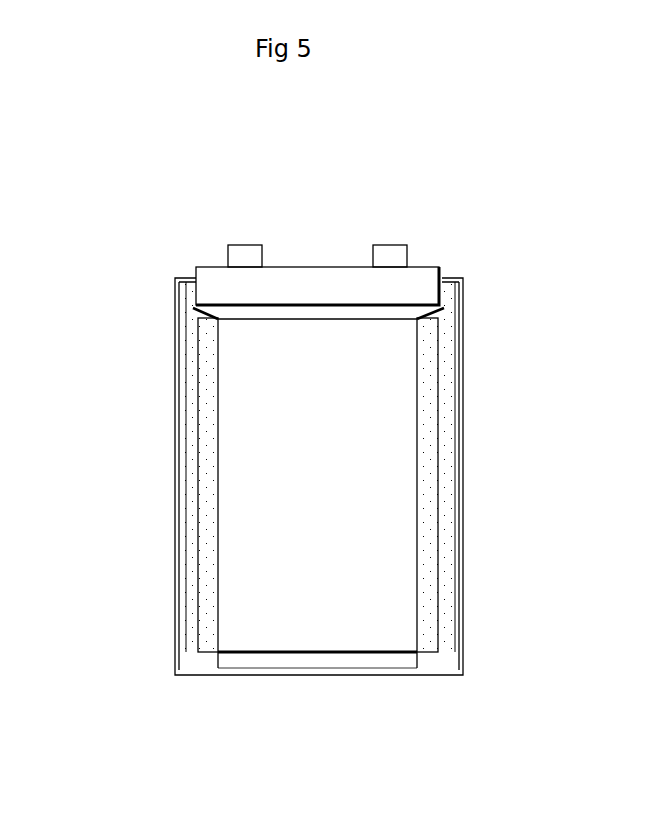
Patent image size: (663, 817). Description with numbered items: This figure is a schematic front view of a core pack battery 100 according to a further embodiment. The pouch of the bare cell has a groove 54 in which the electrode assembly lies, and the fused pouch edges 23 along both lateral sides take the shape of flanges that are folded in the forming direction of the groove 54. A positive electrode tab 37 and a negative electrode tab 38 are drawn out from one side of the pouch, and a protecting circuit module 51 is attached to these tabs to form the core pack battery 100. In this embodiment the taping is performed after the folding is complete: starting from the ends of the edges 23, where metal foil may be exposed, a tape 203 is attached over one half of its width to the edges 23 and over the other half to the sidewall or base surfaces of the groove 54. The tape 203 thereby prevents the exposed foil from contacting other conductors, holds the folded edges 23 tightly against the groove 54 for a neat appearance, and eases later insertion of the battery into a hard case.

The core pack battery 100 is at (118, 377).
The edges 23 is at (452, 453).
The protecting circuit module 51 is at (303, 272).
The negative electrode tab 38 is at (245, 243).
The positive electrode tab 37 is at (392, 243).
The groove 54 is at (393, 542).
The tape 203 is at (208, 637).